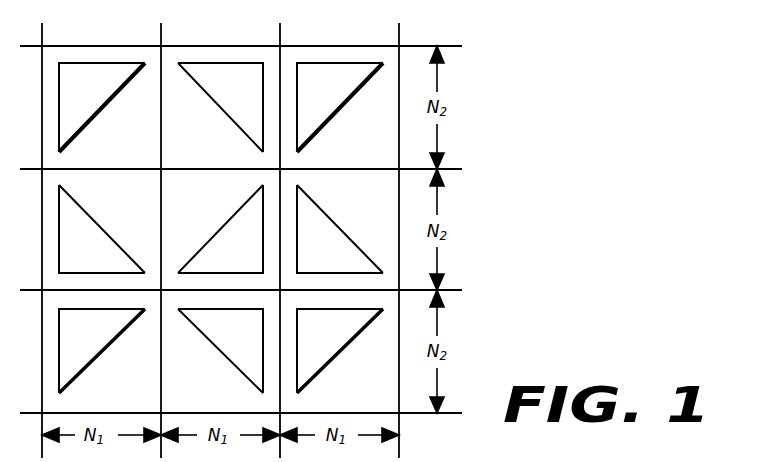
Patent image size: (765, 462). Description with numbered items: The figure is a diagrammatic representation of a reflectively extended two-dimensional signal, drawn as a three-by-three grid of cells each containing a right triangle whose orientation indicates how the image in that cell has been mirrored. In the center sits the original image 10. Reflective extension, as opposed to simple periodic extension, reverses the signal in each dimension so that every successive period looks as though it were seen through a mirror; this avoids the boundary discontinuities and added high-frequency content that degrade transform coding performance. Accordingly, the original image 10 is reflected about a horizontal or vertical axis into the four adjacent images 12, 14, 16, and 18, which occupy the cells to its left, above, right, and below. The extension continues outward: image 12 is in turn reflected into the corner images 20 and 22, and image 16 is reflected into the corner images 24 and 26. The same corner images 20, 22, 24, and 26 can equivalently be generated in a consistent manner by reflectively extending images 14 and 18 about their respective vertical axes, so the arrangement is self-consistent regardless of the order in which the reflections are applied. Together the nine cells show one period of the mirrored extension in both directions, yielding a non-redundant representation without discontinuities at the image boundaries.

The original image 10 is at (224, 252).
The image 12 is at (67, 252).
The image 14 is at (228, 105).
The image 16 is at (306, 252).
The image 18 is at (229, 349).
The image 20 is at (74, 105).
The image 22 is at (69, 349).
The image 24 is at (307, 105).
The image 26 is at (307, 349).